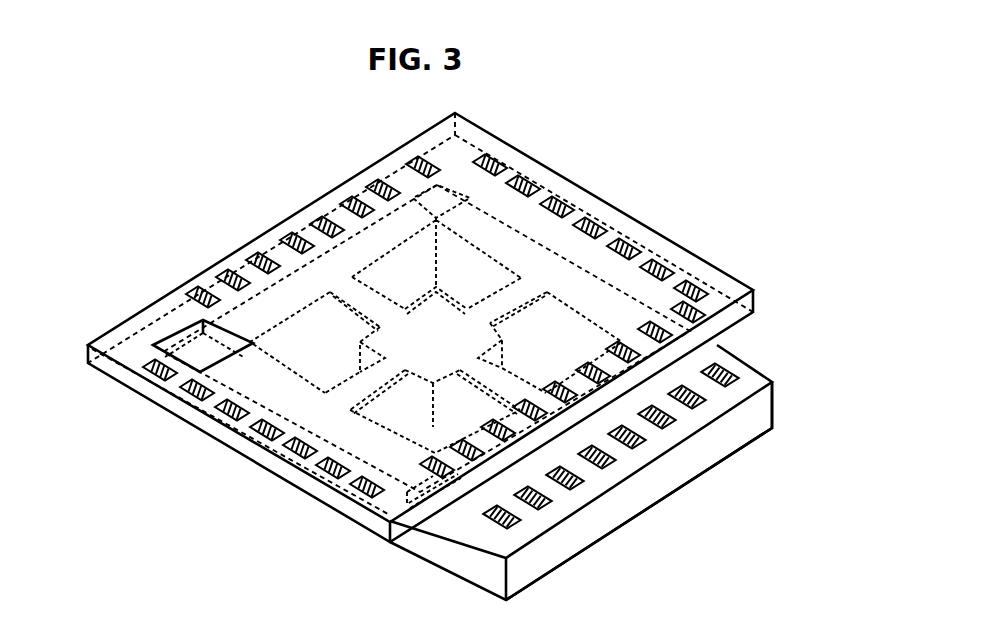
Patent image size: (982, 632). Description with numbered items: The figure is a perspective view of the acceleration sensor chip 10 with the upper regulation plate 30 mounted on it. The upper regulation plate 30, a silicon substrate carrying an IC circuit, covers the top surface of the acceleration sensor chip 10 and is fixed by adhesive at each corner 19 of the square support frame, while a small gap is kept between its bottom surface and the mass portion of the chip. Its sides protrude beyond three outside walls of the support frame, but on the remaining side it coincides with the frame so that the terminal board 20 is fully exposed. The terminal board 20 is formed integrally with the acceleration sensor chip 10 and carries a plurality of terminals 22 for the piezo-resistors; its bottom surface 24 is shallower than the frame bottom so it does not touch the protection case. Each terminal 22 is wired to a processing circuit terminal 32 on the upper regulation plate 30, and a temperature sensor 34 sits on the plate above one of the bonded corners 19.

The acceleration sensor chip 10 is at (310, 420).
The corner 19 is at (440, 200).
The terminal board 20 is at (463, 557).
The terminals 22 is at (675, 420).
The bottom surface of the terminal board 24 is at (614, 534).
The upper regulation plate 30 is at (594, 200).
The processing circuit terminals 32 is at (690, 312).
The temperature sensor 34 is at (190, 323).